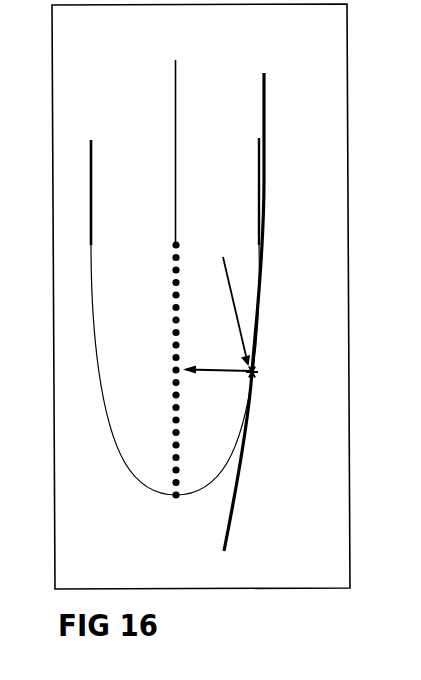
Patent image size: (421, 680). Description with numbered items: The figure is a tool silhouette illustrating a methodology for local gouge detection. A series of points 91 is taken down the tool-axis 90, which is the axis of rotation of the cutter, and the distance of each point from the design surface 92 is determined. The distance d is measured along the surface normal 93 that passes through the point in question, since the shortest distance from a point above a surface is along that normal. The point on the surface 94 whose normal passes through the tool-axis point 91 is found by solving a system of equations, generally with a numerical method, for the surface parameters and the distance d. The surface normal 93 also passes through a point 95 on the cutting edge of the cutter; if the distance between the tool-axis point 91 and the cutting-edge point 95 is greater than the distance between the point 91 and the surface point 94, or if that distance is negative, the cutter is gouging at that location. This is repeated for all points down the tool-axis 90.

The tool-axis 90 is at (175, 273).
The point on the tool-axis 91 is at (156, 369).
The design surface 92 is at (268, 303).
The surface normal 93 is at (217, 373).
The point on the surface 94 is at (276, 374).
The point on the cutting edge 95 is at (223, 294).